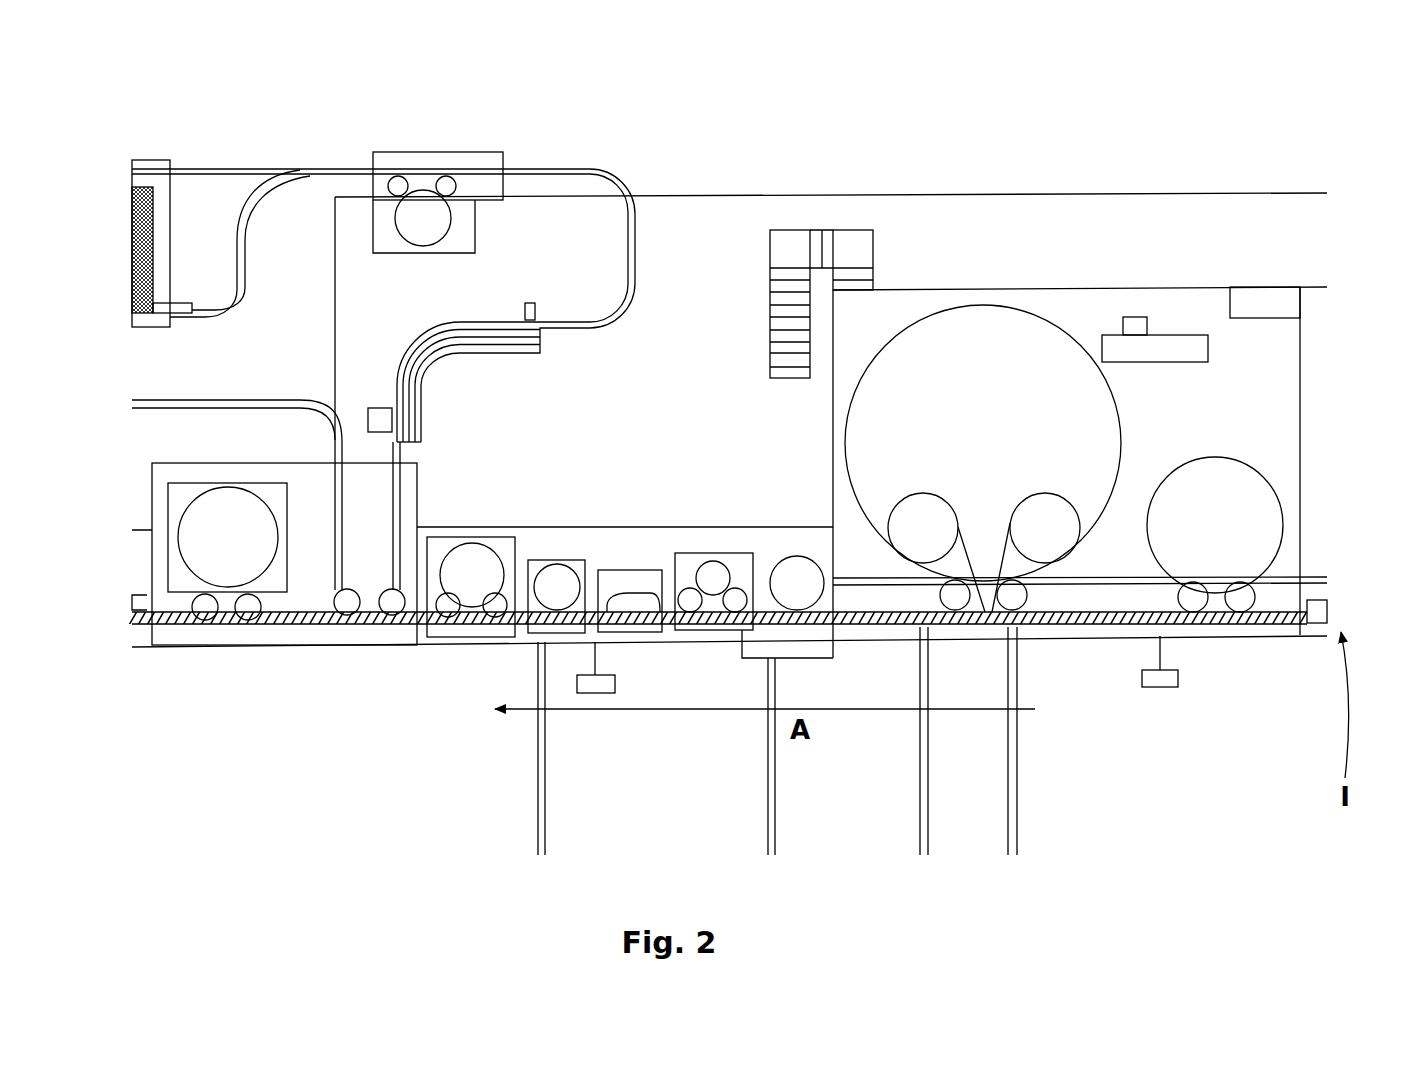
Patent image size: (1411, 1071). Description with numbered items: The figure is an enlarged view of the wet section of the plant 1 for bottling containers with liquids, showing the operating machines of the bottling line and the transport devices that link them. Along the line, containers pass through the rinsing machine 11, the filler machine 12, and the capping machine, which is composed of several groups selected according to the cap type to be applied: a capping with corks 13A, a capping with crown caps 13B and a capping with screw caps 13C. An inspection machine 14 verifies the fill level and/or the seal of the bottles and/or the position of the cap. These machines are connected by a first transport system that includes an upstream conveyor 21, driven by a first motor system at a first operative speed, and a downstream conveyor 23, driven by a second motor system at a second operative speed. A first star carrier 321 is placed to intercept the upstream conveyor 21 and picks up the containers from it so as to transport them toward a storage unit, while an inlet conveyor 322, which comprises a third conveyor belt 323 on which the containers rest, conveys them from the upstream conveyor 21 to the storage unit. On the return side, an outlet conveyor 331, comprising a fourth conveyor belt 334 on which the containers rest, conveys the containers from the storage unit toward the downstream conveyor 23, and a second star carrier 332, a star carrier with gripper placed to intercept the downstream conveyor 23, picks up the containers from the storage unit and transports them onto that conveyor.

The plant for bottling containers with liquids 1 is at (1345, 173).
The rinsing machine 11 is at (1192, 498).
The filler machine 12 is at (963, 380).
The capping with corks 13A is at (477, 565).
The capping with crown caps 13B is at (567, 583).
The capping with screw caps 13C is at (777, 567).
The inspection machine 14 is at (227, 542).
The upstream conveyor 21 is at (441, 619).
The downstream conveyor 23 is at (313, 627).
The first star carrier 321 is at (392, 606).
The inlet conveyor 322 is at (622, 168).
The third conveyor belt 323 is at (636, 265).
The outlet conveyor 331 is at (300, 385).
The second star carrier 332 is at (348, 606).
The fourth conveyor belt 334 is at (222, 397).